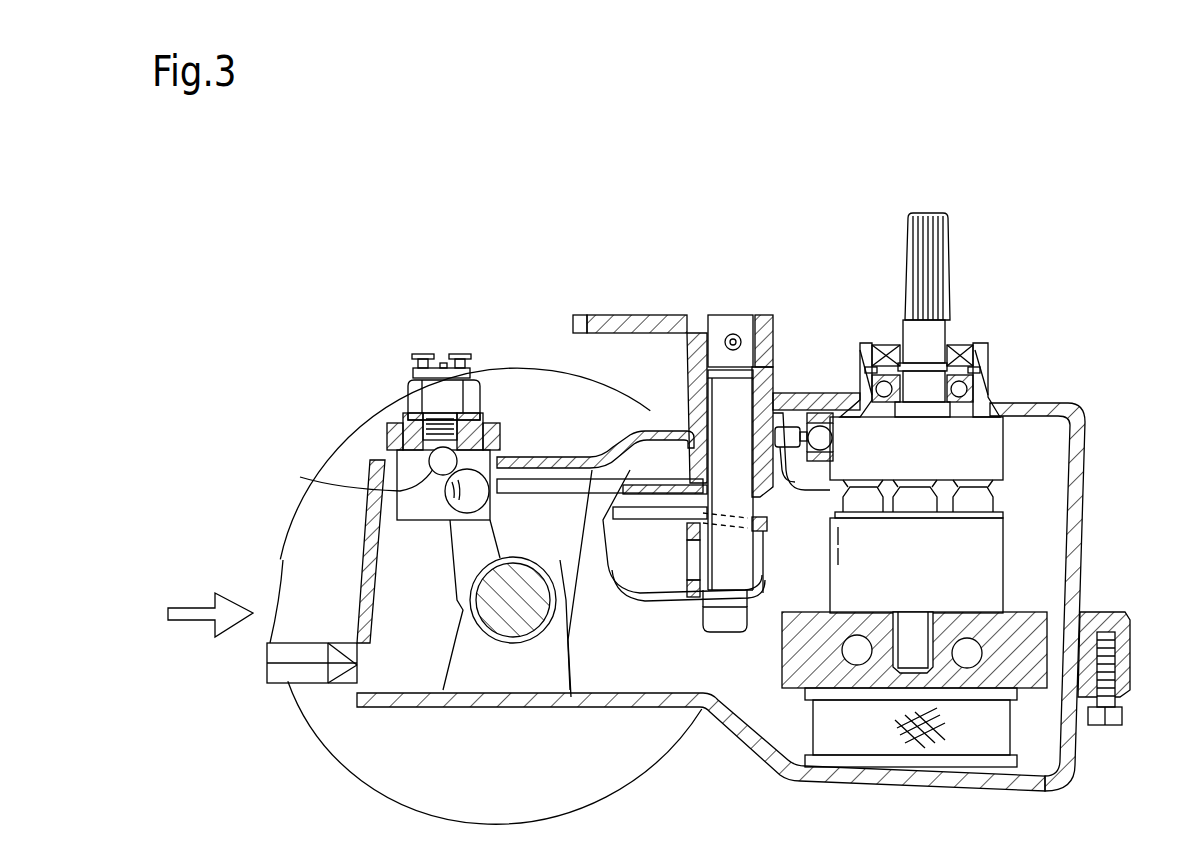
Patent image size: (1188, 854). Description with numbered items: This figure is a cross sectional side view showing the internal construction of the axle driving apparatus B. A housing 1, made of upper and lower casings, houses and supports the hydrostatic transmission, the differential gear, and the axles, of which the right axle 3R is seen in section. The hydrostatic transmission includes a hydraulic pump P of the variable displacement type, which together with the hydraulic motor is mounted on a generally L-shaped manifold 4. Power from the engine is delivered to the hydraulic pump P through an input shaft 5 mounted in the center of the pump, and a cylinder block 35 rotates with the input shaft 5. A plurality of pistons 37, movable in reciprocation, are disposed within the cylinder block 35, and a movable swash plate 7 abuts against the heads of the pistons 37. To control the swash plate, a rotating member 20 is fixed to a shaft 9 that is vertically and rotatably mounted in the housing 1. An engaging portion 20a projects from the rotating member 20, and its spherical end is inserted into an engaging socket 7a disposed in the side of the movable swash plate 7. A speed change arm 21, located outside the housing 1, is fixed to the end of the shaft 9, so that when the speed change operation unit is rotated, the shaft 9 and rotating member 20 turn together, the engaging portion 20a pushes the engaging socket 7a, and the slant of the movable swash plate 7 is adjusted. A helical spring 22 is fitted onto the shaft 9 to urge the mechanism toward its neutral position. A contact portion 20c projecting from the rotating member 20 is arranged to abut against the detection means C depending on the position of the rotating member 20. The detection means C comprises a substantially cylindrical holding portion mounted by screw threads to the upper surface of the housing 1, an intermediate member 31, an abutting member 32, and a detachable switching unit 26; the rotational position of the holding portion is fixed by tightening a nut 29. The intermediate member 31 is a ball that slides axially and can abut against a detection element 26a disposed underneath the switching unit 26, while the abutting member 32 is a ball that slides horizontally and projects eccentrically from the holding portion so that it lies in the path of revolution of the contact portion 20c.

The housing 1 is at (1078, 452).
The axle 3R is at (477, 622).
The manifold 4 is at (1040, 623).
The input shaft 5 is at (943, 264).
The movable swash plate 7 is at (995, 447).
The engaging socket 7a is at (820, 462).
The shaft 9 is at (730, 319).
The rotating member 20 is at (655, 480).
The engaging portion 20a is at (820, 426).
The contact portion 20c is at (530, 488).
The speed change arm 21 is at (630, 316).
The helical spring 22 is at (760, 520).
The switching unit 26 is at (443, 366).
The detection element 26a is at (482, 412).
The nut 29 is at (378, 414).
The intermediate member 31 is at (300, 477).
The abutting member 32 is at (490, 500).
The cylinder block 35 is at (993, 530).
The pistons 37 is at (878, 500).
The axle driving apparatus B is at (193, 613).
The detection means C is at (381, 327).
The hydraulic pump P is at (1042, 547).